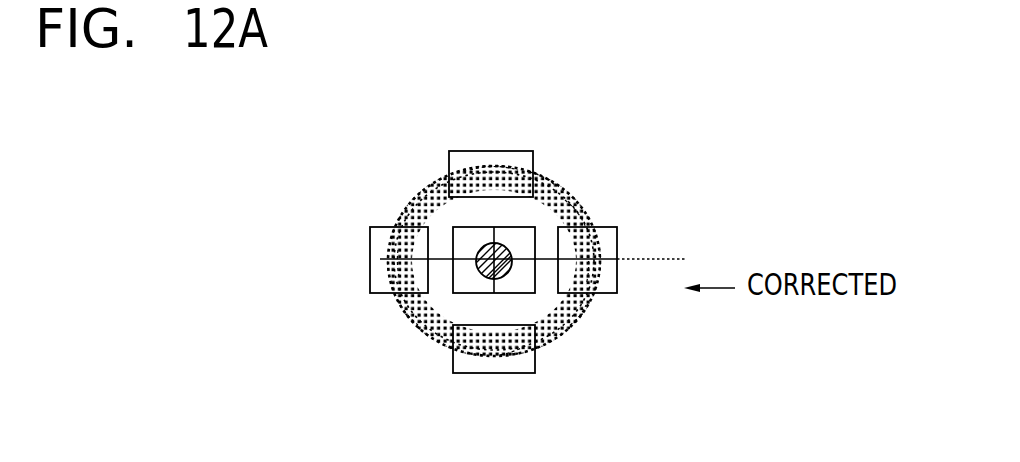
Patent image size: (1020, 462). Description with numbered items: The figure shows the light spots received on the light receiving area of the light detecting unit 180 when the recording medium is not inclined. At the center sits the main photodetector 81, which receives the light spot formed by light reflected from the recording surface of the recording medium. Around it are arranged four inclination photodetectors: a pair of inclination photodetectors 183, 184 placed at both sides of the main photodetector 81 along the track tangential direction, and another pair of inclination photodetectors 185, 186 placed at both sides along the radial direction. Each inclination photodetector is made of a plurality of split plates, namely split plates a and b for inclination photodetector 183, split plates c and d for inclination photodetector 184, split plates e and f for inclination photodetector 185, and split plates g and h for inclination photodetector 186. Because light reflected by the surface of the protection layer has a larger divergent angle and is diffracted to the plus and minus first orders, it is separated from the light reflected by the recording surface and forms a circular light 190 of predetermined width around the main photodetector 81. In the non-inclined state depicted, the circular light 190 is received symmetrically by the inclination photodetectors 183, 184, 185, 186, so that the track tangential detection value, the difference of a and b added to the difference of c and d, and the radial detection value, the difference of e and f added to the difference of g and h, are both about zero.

The light detecting unit 180 is at (497, 250).
The inclination photodetector 183 is at (488, 151).
The inclination photodetector 184 is at (483, 374).
The inclination photodetector 185 is at (370, 246).
The inclination photodetector 186 is at (619, 243).
The main photodetector 81 is at (465, 227).
The circular light 190 is at (590, 307).
The split plate a is at (515, 152).
The split plate b is at (546, 181).
The split plate c is at (573, 332).
The split plate d is at (523, 361).
The split plate e is at (383, 276).
The split plate f is at (397, 307).
The split plate g is at (578, 214).
The split plate h is at (593, 268).